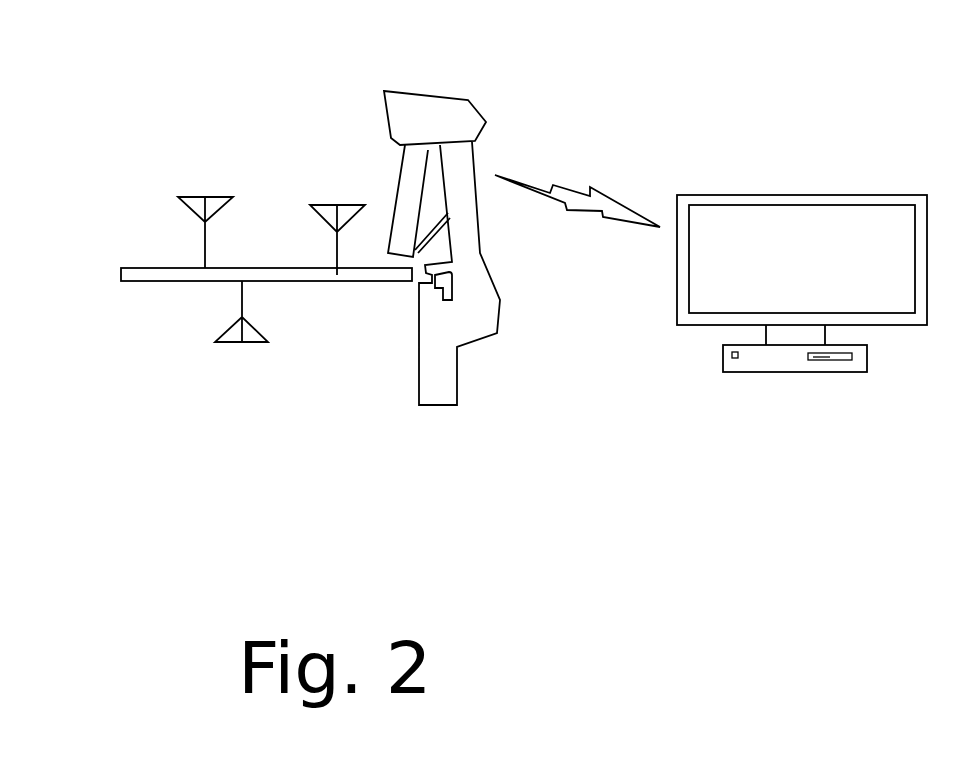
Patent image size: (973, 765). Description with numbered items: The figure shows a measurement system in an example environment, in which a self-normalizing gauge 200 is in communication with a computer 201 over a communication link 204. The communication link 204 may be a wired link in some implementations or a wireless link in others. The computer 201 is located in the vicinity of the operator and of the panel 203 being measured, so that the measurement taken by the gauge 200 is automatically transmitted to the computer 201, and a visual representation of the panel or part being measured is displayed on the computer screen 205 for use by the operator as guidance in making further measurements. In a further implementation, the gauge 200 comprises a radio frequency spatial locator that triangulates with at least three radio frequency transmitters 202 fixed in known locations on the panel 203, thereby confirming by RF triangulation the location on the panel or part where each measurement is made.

The self-normalizing gauge 200 is at (422, 92).
The computer 201 is at (802, 245).
The radio frequency transmitters 202 is at (180, 200).
The panel 203 is at (160, 267).
The communication link 204 is at (587, 190).
The computer screen 205 is at (805, 290).